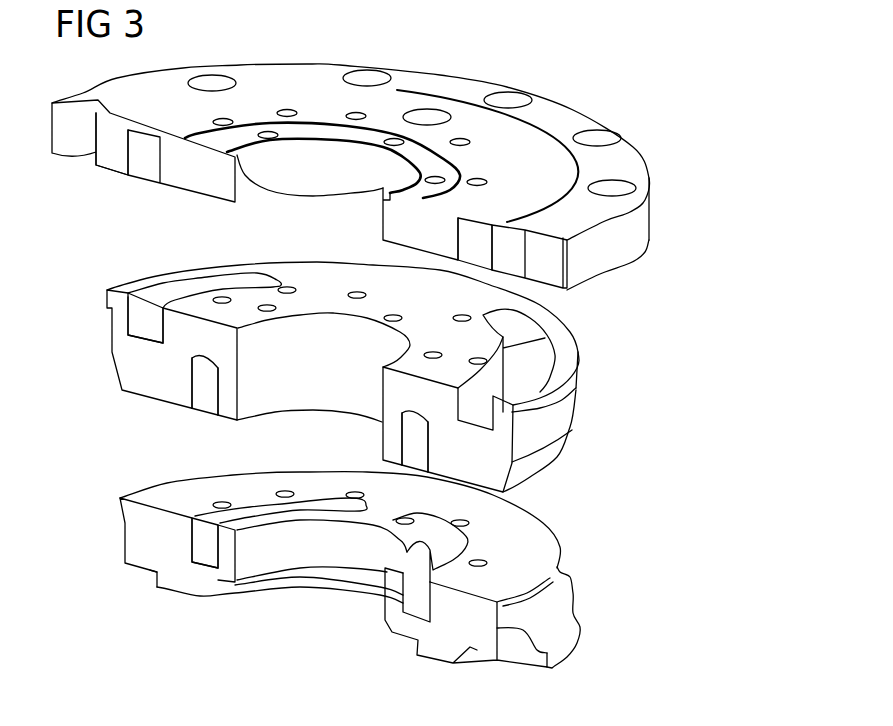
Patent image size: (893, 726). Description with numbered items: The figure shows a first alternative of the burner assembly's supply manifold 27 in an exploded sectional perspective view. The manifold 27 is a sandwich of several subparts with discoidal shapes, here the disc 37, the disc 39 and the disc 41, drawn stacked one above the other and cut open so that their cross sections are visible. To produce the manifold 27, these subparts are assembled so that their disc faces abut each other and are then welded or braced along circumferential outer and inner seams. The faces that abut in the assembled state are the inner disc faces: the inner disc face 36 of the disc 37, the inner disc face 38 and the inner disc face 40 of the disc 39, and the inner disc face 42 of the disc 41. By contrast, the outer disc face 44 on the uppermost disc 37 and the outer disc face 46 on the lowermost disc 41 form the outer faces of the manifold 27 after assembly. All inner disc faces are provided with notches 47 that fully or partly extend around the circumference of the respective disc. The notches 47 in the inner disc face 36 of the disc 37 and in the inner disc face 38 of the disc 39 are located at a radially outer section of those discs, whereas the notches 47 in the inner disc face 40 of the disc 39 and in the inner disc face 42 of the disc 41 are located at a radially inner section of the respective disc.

The supply manifold 27 is at (672, 304).
The inner disc face 36 is at (203, 196).
The disc 37 is at (641, 157).
The inner disc face 38 is at (130, 295).
The disc 39 is at (576, 397).
The inner disc face 40 is at (133, 395).
The disc 41 is at (559, 543).
The inner disc face 42 is at (200, 495).
The outer disc face 44 is at (571, 116).
The outer disc face 46 is at (208, 605).
The notches 47 is at (137, 153).